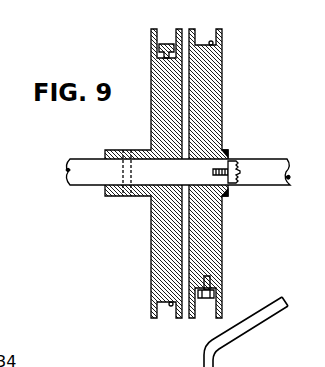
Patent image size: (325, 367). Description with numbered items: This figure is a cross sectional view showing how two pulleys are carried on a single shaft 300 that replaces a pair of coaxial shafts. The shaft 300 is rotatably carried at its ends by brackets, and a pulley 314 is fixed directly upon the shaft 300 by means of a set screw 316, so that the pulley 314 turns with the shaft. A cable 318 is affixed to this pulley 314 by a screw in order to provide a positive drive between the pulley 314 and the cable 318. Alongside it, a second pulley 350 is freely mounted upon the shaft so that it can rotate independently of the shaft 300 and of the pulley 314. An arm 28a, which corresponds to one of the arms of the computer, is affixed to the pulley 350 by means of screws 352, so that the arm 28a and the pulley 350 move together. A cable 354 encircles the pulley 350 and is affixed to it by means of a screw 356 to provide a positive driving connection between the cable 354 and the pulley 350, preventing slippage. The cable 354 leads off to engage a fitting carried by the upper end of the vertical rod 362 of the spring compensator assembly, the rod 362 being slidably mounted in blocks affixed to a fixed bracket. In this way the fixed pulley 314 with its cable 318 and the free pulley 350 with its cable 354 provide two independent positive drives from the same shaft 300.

The pulley 314 is at (156, 118).
The pulley 350 is at (222, 248).
The shaft 300 is at (288, 154).
The set screw 316 is at (128, 198).
The cable 318 is at (171, 46).
The screws 352 is at (258, 144).
The cable 354 is at (213, 43).
The screw 356 is at (207, 300).
The rod 362 is at (222, 365).
The arm 28a is at (228, 192).